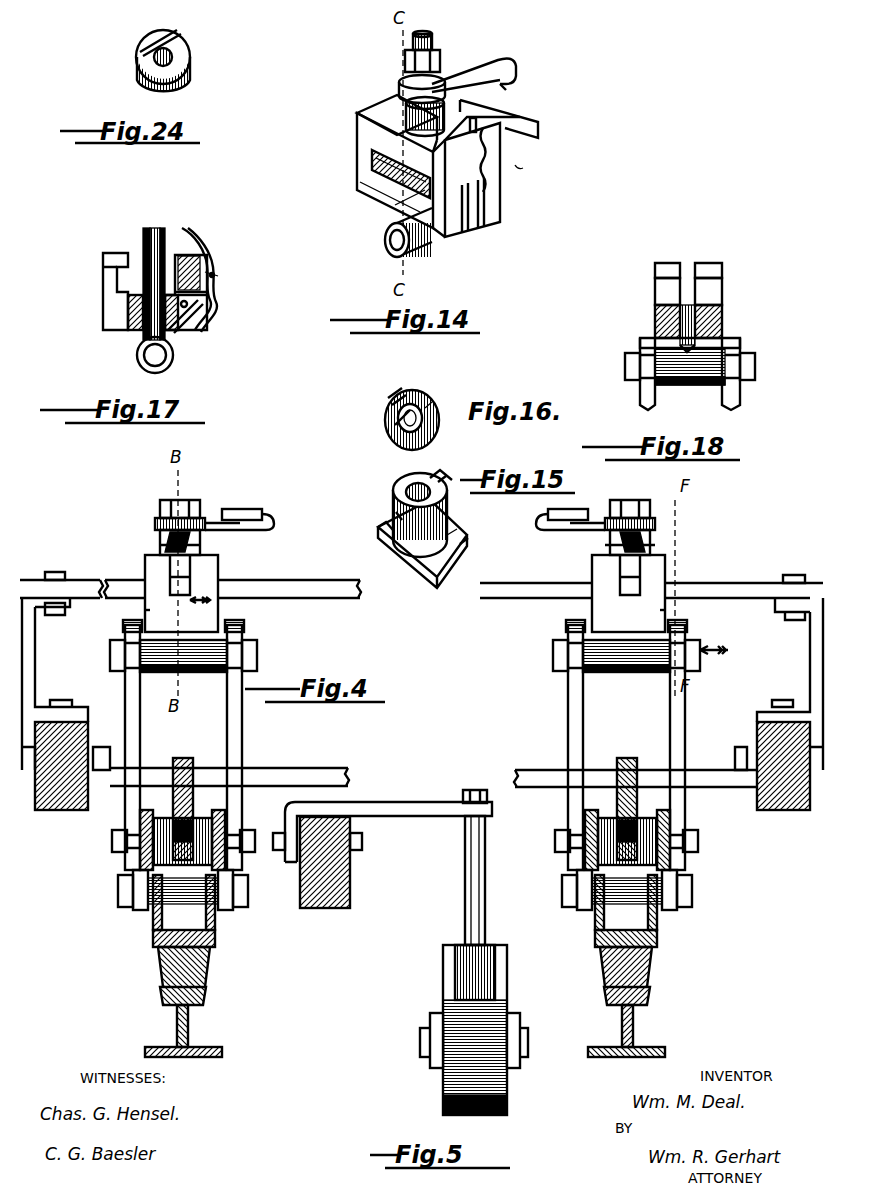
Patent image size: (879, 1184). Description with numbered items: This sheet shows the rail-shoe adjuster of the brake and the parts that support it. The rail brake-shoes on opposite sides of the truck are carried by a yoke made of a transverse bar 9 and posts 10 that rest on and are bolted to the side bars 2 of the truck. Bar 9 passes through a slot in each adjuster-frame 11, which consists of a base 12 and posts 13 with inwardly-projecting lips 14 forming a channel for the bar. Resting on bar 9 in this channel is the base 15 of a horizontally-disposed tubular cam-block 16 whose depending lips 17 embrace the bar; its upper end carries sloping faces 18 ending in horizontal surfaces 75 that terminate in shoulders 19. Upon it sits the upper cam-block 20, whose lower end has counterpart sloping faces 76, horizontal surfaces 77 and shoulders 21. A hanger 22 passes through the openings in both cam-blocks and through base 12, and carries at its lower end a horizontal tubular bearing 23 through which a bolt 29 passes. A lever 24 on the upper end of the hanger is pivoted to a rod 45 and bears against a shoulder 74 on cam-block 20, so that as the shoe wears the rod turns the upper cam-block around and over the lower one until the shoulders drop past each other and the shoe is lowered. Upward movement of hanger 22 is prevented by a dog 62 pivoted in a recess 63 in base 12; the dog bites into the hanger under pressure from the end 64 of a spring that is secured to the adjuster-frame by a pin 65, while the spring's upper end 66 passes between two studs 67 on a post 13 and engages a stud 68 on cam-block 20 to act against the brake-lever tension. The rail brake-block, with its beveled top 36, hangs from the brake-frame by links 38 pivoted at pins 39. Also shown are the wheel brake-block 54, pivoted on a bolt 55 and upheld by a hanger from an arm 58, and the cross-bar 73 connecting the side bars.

In FIG. 4, the side bars 2 is at (55, 818).
In FIG. 5, the side bars 2 is at (351, 887).
In FIG. 14, the transverse bar 9 is at (520, 117).
In FIG. 4, the transverse bar 9 is at (530, 594).
In FIG. 4, the posts 10 is at (36, 689).
In FIG. 14, the adjuster-frames 11 is at (529, 169).
In FIG. 14, the base 12 is at (493, 206).
In FIG. 17, the base 12 is at (128, 320).
In FIG. 18, the base 12 is at (720, 322).
In FIG. 14, the posts 13 is at (365, 142).
In FIG. 17, the posts 13 is at (203, 257).
In FIG. 18, the posts 13 is at (722, 291).
In FIG. 14, the inwardly-projecting lips 14 is at (372, 160).
In FIG. 17, the inwardly-projecting lips 14 is at (125, 257).
In FIG. 18, the inwardly-projecting lips 14 is at (660, 276).
In FIG. 14, the base 15 is at (378, 172).
In FIG. 15, the base 15 is at (452, 547).
In FIG. 14, the cam-block 16 is at (390, 190).
In FIG. 15, the cam-block 16 is at (450, 523).
In FIG. 4, the cam-block 16 is at (157, 553).
In FIG. 14, the depending lips 17 is at (400, 206).
In FIG. 15, the depending lips 17 is at (425, 584).
In FIG. 14, the sloping faces 18 is at (448, 160).
In FIG. 15, the sloping faces 18 is at (403, 486).
In FIG. 4, the sloping faces 18 is at (660, 560).
In FIG. 14, the shoulders 19 is at (365, 116).
In FIG. 15, the shoulders 19 is at (440, 483).
In FIG. 24, the cam-block 20 is at (188, 65).
In FIG. 14, the cam-block 20 is at (405, 103).
In FIG. 16, the cam-block 20 is at (430, 404).
In FIG. 24, the shoulders 21 is at (147, 84).
In FIG. 14, the shoulders 21 is at (400, 85).
In FIG. 16, the shoulders 21 is at (437, 431).
In FIG. 17, the hanger 22 is at (143, 337).
In FIG. 18, the hanger 22 is at (685, 329).
In FIG. 14, the horizontal tubular bearing 23 is at (385, 250).
In FIG. 17, the horizontal tubular bearing 23 is at (137, 369).
In FIG. 18, the horizontal tubular bearing 23 is at (700, 386).
In FIG. 14, the lever 24 is at (518, 80).
In FIG. 18, the bolt 29 is at (755, 367).
In FIG. 18, the top of end of rail brake-block 36 is at (735, 394).
In FIG. 4, the links 38 is at (577, 873).
In FIG. 4, the pivot-pins 39 is at (577, 897).
In FIG. 14, the rod 45 is at (495, 63).
In FIG. 5, the wheel brake-block 54 is at (508, 1096).
In FIG. 5, the bolt 55 is at (430, 1047).
In FIG. 5, the arm 58 is at (440, 819).
In FIG. 17, the dog 62 is at (173, 338).
In FIG. 14, the recess 63 is at (479, 214).
In FIG. 17, the recess 63 is at (200, 331).
In FIG. 14, the end of spring 64 is at (465, 233).
In FIG. 17, the end of spring 64 is at (208, 311).
In FIG. 17, the pin 65 is at (216, 276).
In FIG. 14, the upper end of spring 66 is at (488, 140).
In FIG. 17, the upper end of spring 66 is at (194, 240).
In FIG. 14, the studs 67 is at (478, 118).
In FIG. 14, the stud 68 is at (433, 80).
In FIG. 4, the cross-bar 73 is at (297, 776).
In FIG. 24, the shoulder 74 is at (178, 36).
In FIG. 16, the shoulder 74 is at (397, 406).
In FIG. 15, the horizontal surfaces 75 is at (443, 479).
In FIG. 16, the sloping faces 76 is at (436, 413).
In FIG. 16, the horizontal surfaces 77 is at (393, 429).